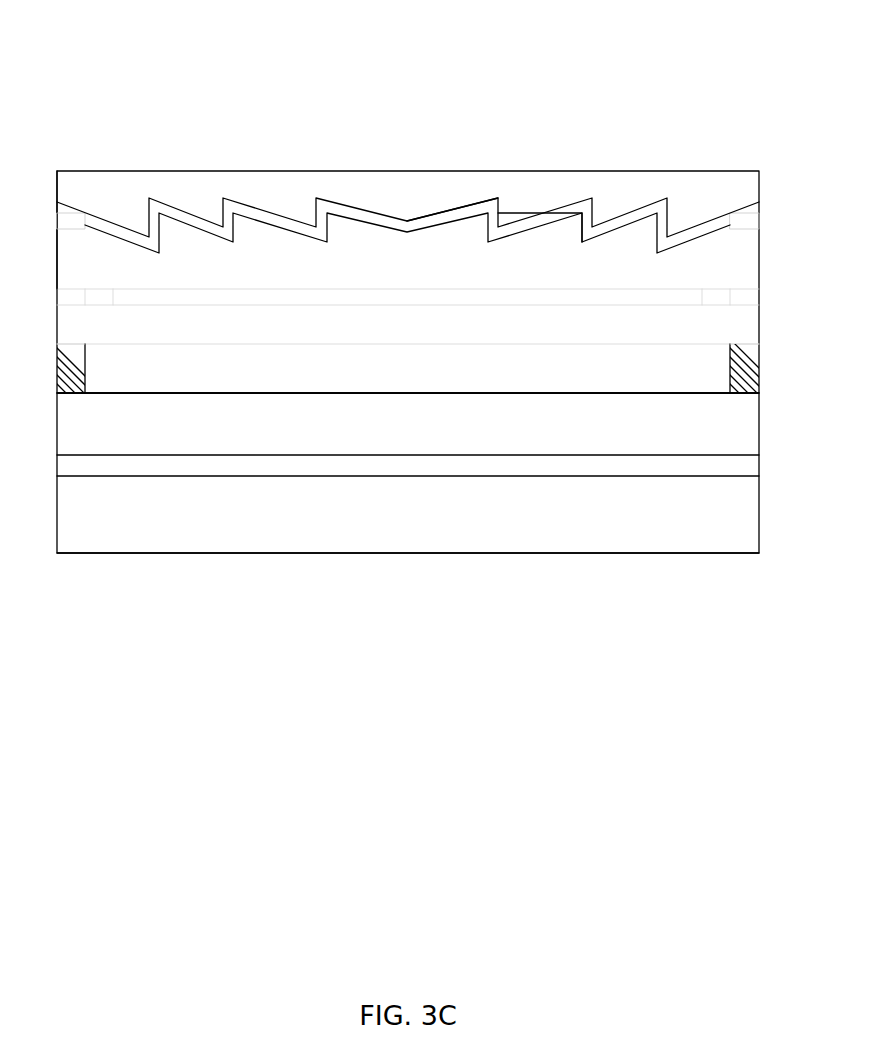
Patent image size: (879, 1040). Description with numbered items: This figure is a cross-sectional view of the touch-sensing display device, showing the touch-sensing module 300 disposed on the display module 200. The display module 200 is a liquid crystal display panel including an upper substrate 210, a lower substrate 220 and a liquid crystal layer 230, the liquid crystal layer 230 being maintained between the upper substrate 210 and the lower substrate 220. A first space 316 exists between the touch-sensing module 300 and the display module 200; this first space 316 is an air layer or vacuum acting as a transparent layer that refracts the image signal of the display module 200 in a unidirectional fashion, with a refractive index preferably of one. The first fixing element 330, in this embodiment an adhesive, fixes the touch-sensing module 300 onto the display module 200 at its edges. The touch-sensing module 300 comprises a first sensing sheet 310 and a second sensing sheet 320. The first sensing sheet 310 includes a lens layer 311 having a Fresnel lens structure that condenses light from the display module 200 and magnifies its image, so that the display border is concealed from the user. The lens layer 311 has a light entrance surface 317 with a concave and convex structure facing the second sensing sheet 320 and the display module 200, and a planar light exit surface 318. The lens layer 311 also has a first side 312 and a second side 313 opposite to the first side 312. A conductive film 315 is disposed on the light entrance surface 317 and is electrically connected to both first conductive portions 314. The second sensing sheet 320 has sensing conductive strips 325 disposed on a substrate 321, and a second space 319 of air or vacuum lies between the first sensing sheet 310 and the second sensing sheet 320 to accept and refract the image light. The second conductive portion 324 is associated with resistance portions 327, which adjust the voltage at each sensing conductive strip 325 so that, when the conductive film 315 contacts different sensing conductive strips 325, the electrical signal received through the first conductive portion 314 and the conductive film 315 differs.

The display module 200 is at (408, 535).
The upper substrate 210 is at (585, 437).
The lower substrate 220 is at (362, 622).
The liquid crystal layer 230 is at (375, 462).
The touch-sensing module 300 is at (760, 170).
The first sensing sheet 310 is at (408, 146).
The lens layer 311 is at (407, 165).
The first side 312 is at (57, 184).
The second side 313 is at (760, 181).
The first conductive portion 314 is at (68, 213).
The conductive film 315 is at (362, 215).
The first space 316 is at (127, 378).
The light entrance surface 317 is at (540, 181).
The light exit surface 318 is at (447, 171).
The second space 319 is at (65, 260).
The second sensing sheet 320 is at (389, 196).
The substrate 321 is at (565, 325).
The second conductive portion 324 is at (65, 295).
The sensing conductive strips 325 is at (692, 297).
The resistance portion 327 is at (743, 297).
The first fixing element 330 is at (65, 370).